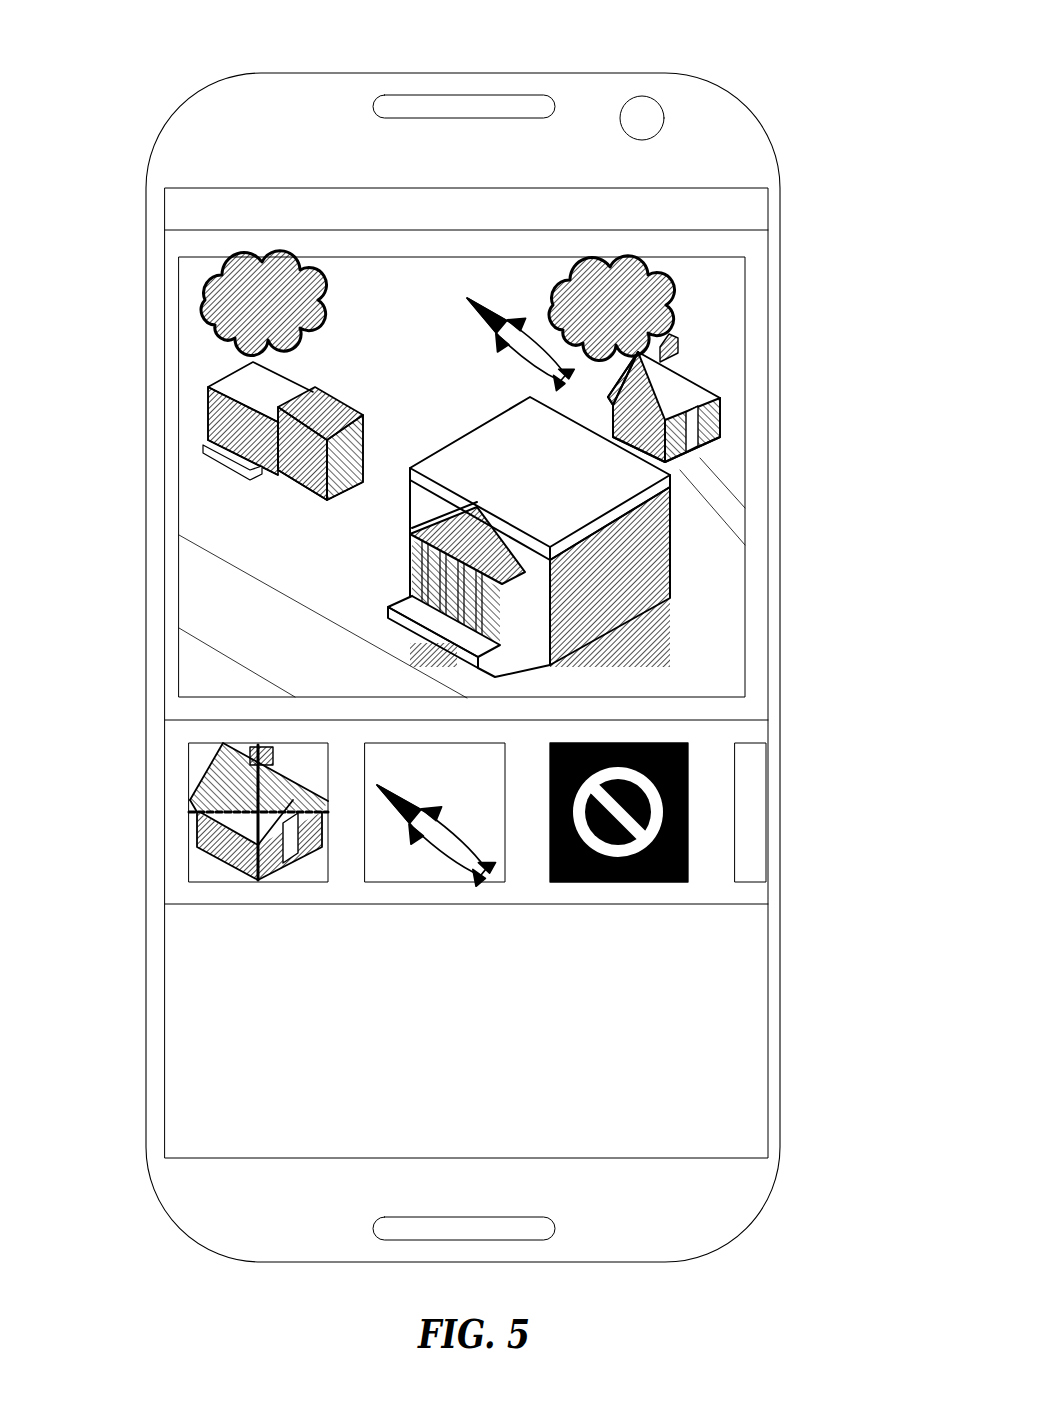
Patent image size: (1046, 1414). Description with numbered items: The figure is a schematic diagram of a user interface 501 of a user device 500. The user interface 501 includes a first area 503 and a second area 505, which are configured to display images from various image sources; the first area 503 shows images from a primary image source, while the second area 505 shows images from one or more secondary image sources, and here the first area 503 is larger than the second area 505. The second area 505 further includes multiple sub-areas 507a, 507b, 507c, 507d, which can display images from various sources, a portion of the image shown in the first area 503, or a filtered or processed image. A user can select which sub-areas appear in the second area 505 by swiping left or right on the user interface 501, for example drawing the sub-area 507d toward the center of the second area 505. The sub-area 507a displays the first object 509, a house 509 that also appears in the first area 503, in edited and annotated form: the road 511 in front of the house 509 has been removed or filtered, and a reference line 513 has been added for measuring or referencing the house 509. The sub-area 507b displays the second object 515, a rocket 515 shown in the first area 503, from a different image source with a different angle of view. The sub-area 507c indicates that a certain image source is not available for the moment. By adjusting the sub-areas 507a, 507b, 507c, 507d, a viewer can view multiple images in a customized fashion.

The user device 500 is at (856, 80).
The user interface 501 is at (765, 220).
The first area 503 is at (491, 354).
The second area 505 is at (450, 839).
The sub-area 507a is at (169, 742).
The sub-area 507b is at (437, 880).
The sub-area 507c is at (630, 882).
The sub-area 507d is at (755, 853).
The first object 509 is at (717, 418).
The road 511 is at (702, 468).
The reference line 513 is at (240, 785).
The second object 515 is at (523, 338).